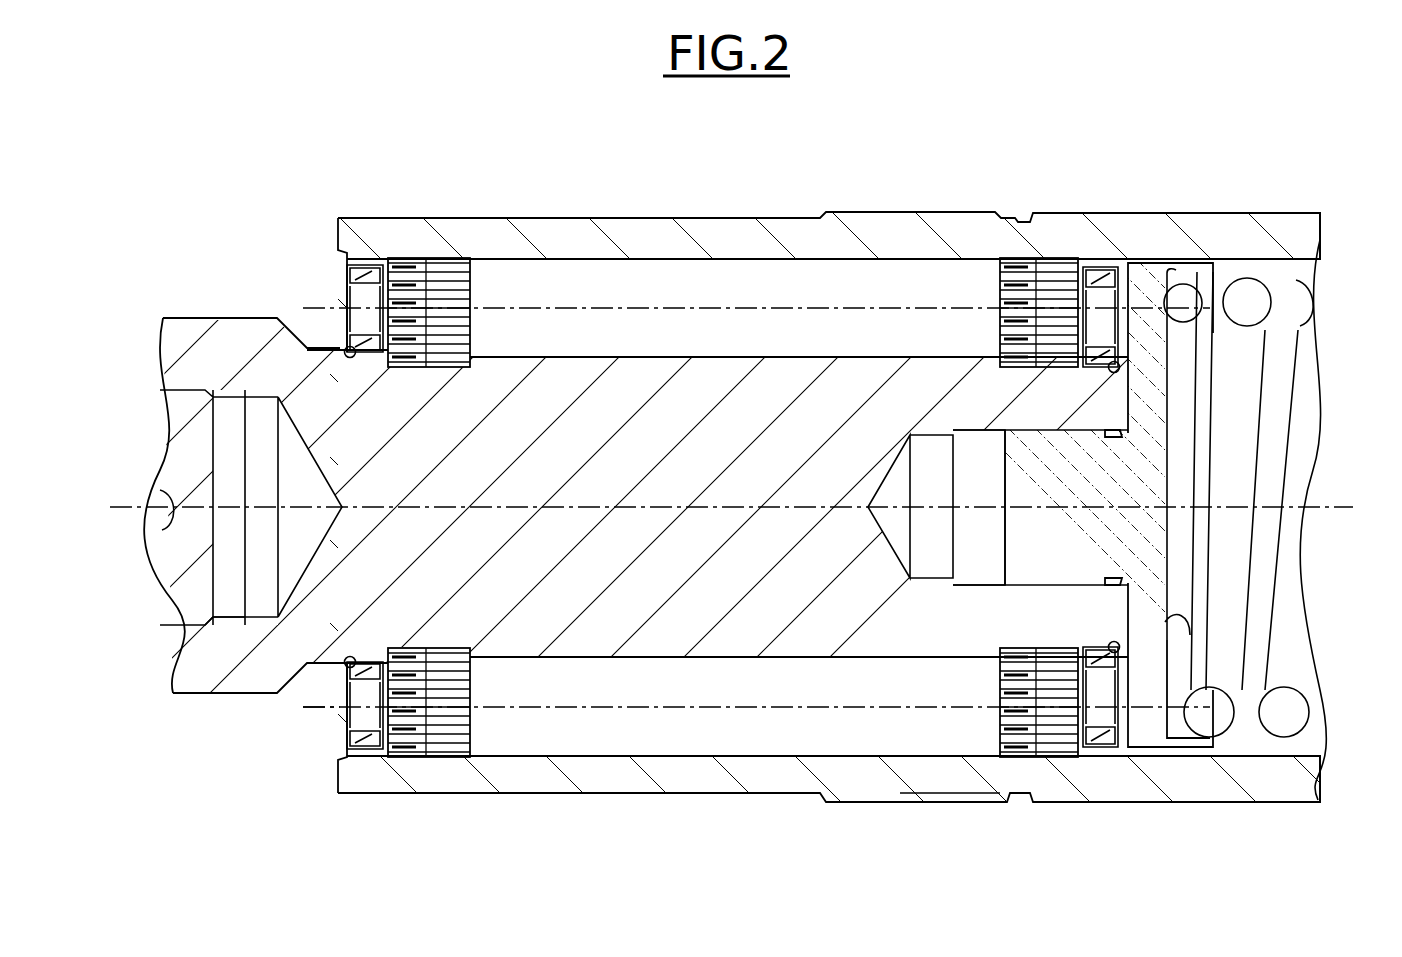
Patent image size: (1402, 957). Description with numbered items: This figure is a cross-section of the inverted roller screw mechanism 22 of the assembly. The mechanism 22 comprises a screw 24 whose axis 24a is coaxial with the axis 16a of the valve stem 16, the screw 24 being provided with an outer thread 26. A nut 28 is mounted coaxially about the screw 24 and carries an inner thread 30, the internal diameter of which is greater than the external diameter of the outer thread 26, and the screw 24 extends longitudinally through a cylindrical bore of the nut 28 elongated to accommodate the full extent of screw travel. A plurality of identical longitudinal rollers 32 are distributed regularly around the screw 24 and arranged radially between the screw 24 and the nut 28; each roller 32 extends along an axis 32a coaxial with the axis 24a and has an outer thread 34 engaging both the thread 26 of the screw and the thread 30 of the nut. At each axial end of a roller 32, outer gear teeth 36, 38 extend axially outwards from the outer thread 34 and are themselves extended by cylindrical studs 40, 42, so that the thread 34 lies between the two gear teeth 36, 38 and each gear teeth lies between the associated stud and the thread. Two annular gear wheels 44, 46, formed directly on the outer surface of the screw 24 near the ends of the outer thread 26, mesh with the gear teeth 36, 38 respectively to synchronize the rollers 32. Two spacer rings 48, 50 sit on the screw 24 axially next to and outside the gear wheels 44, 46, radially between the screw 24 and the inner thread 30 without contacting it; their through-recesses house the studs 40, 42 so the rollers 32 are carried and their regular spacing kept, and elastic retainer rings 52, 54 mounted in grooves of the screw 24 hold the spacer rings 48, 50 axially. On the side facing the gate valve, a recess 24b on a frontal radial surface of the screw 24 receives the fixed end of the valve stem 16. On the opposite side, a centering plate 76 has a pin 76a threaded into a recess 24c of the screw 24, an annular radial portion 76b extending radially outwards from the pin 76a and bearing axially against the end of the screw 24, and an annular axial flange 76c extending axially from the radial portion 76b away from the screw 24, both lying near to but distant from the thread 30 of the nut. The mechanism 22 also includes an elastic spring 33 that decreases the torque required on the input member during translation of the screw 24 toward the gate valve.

The valve stem 16 is at (176, 566).
The axis of the valve stem 16a is at (121, 495).
The inverted roller screw mechanism 22 is at (903, 174).
The screw 24 is at (582, 412).
The axis of the screw 24a is at (123, 500).
The recess 24b is at (221, 602).
The recess 24c is at (978, 587).
The outer thread 26 is at (533, 357).
The nut 28 is at (1137, 223).
The inner thread 30 is at (637, 285).
The longitudinal rollers 32 is at (549, 719).
The axis of the roller 32a is at (306, 707).
The elastic spring 33 is at (1253, 296).
The outer thread 34 is at (960, 758).
The outer gear teeth 36 is at (412, 737).
The outer gear teeth 38 is at (1018, 725).
The cylindrical stud 40 is at (362, 722).
The cylindrical stud 42 is at (1104, 718).
The annular gear wheel 44 is at (404, 366).
The annular gear wheel 46 is at (1052, 360).
The spacer ring 48 is at (367, 277).
The spacer ring 50 is at (1098, 275).
The elastic retainer ring 52 is at (346, 349).
The elastic retainer ring 54 is at (1120, 365).
The centering plate 76 is at (1149, 718).
The pin 76a is at (1075, 472).
The annular radial portion 76b is at (1148, 385).
The annular axial flange 76c is at (1192, 746).